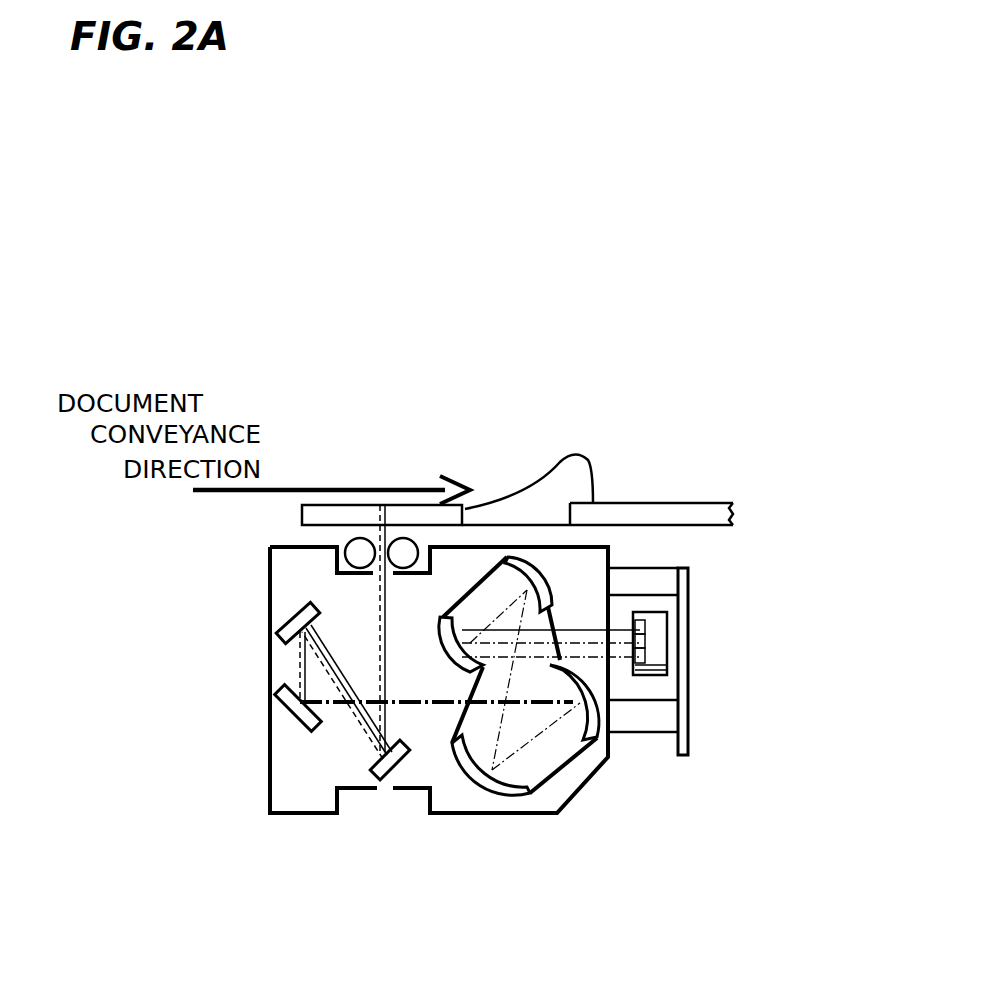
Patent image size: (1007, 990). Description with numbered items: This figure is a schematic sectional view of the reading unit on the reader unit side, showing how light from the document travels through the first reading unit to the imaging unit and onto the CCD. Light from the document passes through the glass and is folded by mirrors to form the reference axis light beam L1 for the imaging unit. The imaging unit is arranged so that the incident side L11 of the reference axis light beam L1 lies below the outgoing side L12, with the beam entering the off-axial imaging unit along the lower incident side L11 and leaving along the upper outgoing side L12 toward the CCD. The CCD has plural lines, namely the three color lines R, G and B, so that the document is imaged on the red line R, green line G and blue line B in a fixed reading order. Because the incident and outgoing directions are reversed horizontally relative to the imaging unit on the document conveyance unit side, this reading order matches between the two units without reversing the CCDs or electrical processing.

The blue line B is at (381, 503).
The green line G is at (379, 503).
The red line R is at (383, 503).
The reference axis light beam L1 is at (378, 594).
The incident side L11 is at (440, 708).
The outgoing side L12 is at (580, 625).